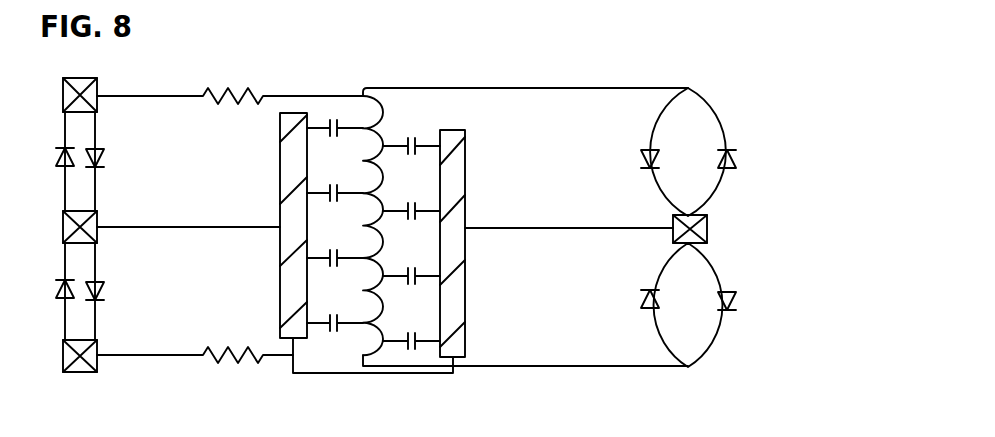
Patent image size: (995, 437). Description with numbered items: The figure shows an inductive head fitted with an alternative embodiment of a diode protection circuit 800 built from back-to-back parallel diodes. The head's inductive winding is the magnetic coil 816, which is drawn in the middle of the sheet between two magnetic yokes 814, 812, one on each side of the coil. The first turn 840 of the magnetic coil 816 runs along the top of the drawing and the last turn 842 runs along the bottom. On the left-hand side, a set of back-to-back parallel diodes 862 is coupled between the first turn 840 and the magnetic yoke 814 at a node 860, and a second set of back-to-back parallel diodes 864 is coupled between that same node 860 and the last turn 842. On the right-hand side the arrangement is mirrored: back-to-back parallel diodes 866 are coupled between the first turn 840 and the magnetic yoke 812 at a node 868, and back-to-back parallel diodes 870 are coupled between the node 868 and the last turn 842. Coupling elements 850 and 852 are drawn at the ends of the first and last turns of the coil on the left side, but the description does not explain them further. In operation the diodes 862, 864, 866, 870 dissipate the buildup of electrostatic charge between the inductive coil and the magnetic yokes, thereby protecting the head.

The diode protection circuit 800 is at (370, 56).
The magnetic yoke 812 is at (457, 170).
The magnetic yoke 814 is at (282, 185).
The magnetic coil 816 is at (349, 362).
The first turn 840 is at (147, 95).
The last turn 842 is at (157, 357).
The coupling element 850 is at (82, 78).
The coupling element 852 is at (80, 373).
The node 860 is at (58, 227).
The back-to-back parallel diodes 862 is at (108, 158).
The back-to-back parallel diodes 864 is at (107, 288).
The back-to-back parallel diodes 866 is at (738, 144).
The node 868 is at (708, 228).
The back-to-back parallel diodes 870 is at (732, 315).